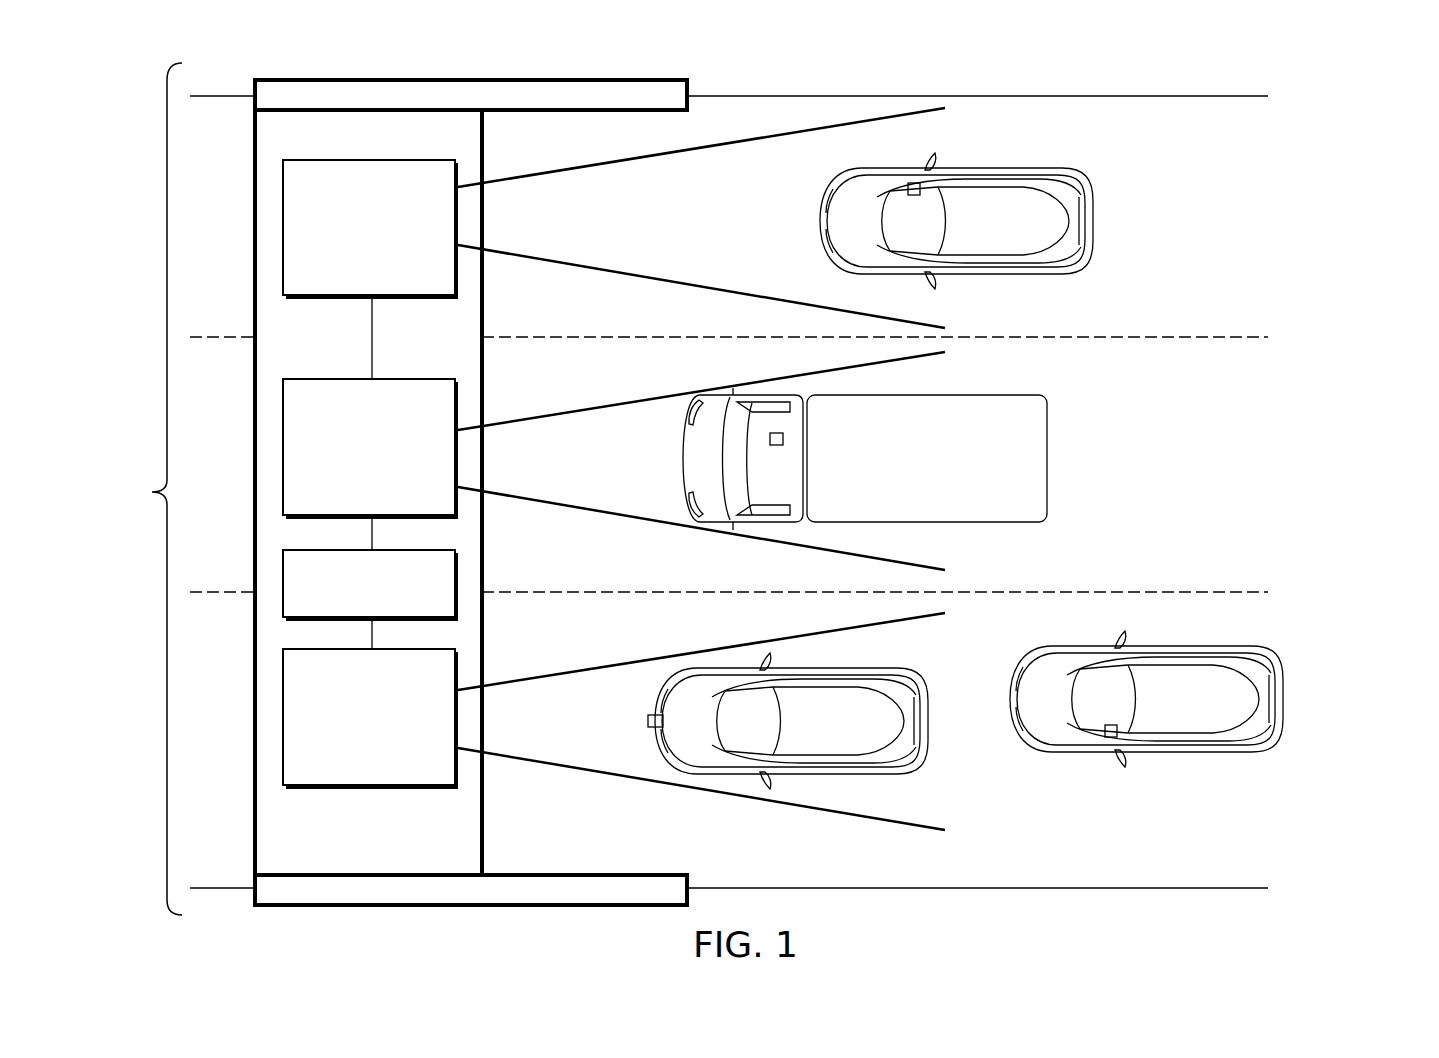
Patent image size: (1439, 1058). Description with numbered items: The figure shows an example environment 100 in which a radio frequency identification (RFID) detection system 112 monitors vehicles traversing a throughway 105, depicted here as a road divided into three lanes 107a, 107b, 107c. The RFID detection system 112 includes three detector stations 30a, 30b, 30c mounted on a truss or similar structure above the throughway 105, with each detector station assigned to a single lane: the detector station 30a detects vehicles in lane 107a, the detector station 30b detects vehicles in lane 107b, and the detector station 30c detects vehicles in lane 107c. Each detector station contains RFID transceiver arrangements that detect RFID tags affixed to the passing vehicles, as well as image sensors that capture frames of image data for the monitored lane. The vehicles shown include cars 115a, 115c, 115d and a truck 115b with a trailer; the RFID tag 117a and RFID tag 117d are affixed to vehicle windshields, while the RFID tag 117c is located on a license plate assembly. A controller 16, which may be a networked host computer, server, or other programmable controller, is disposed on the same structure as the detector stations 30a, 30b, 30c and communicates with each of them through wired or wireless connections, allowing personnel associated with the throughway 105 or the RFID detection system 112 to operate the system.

The environment 100 is at (1350, 85).
The throughway 105 is at (139, 489).
The RFID detection system 112 is at (484, 137).
The controller 16 is at (283, 583).
The detector station 30a is at (283, 228).
The detector station 30b is at (283, 448).
The detector station 30c is at (283, 716).
The lane 107a is at (1262, 208).
The lane 107b is at (1207, 463).
The lane 107c is at (1290, 788).
The vehicle 115a is at (1088, 221).
The vehicle 115b is at (1020, 452).
The vehicle 115c is at (910, 678).
The vehicle 115d is at (1278, 700).
The RFID tag 117a is at (905, 188).
The RFID tag 117c is at (765, 438).
The RFID tag 117d is at (1100, 742).